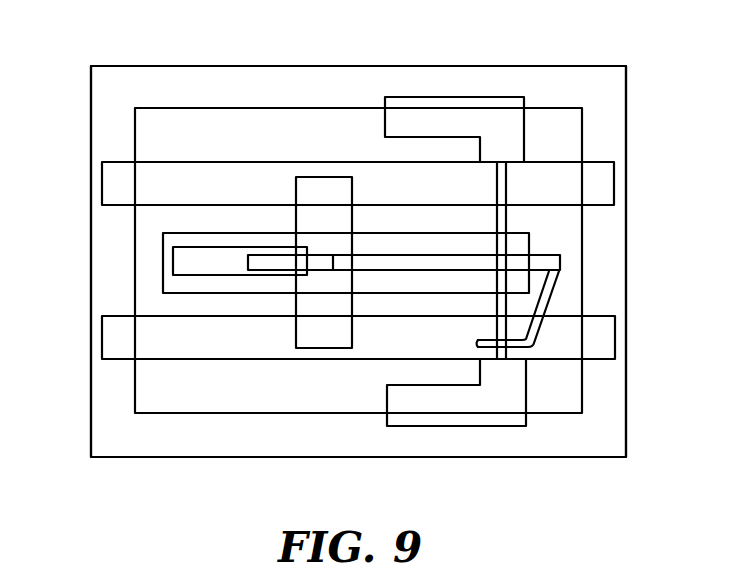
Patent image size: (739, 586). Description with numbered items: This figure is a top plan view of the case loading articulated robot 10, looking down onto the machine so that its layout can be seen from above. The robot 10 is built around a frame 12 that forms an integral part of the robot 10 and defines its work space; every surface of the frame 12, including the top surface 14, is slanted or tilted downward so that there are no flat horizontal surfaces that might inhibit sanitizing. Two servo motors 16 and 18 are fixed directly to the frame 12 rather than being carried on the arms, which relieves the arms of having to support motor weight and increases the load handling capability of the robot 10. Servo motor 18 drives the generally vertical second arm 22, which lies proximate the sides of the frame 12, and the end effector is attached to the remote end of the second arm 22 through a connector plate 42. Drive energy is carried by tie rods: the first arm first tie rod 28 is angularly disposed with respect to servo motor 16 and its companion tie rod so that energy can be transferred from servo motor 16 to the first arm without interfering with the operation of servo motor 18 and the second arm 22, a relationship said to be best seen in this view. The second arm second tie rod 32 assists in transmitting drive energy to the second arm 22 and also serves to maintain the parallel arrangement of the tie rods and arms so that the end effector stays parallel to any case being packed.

The case loading articulated robot 10 is at (222, 486).
The frame 12 is at (307, 73).
The top surface 14 is at (358, 442).
The servo motor 16 is at (462, 418).
The servo motor 18 is at (425, 100).
The second arm 22 is at (163, 264).
The first arm first tie rod 28 is at (543, 308).
The second arm second tie rod 32 is at (545, 259).
The connector plate 42 is at (340, 180).